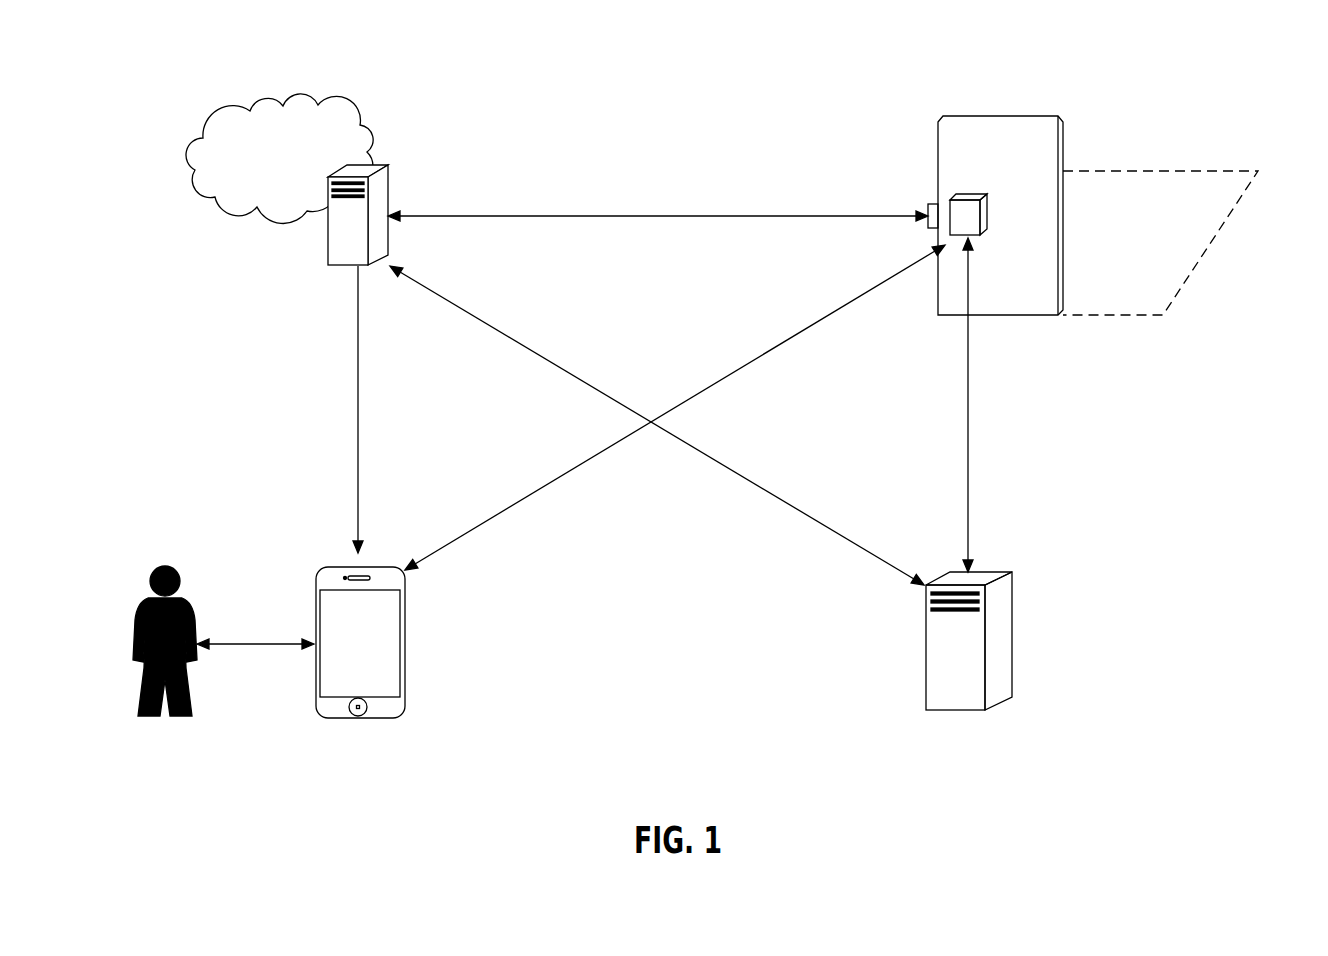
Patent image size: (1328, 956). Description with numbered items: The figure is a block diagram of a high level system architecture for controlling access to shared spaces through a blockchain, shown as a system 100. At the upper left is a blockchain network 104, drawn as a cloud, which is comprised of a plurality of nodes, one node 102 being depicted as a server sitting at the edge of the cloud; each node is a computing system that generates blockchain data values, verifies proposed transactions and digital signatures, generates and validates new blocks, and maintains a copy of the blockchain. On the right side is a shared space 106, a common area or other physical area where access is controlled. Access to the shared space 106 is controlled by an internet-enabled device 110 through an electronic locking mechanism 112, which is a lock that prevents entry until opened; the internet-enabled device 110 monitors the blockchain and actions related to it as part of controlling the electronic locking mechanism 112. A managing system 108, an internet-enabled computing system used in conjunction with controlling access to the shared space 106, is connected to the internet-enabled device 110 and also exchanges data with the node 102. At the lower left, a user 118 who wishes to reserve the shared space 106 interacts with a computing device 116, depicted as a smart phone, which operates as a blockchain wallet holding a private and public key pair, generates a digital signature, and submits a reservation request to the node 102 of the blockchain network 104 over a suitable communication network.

The system 100 is at (112, 63).
The node 102 is at (388, 183).
The blockchain network 104 is at (216, 112).
The shared space 106 is at (1128, 317).
The managing system 108 is at (1012, 612).
The internet-enabled device 110 is at (973, 192).
The electronic locking mechanism 112 is at (934, 203).
The computing device 116 is at (315, 612).
The user 118 is at (160, 565).